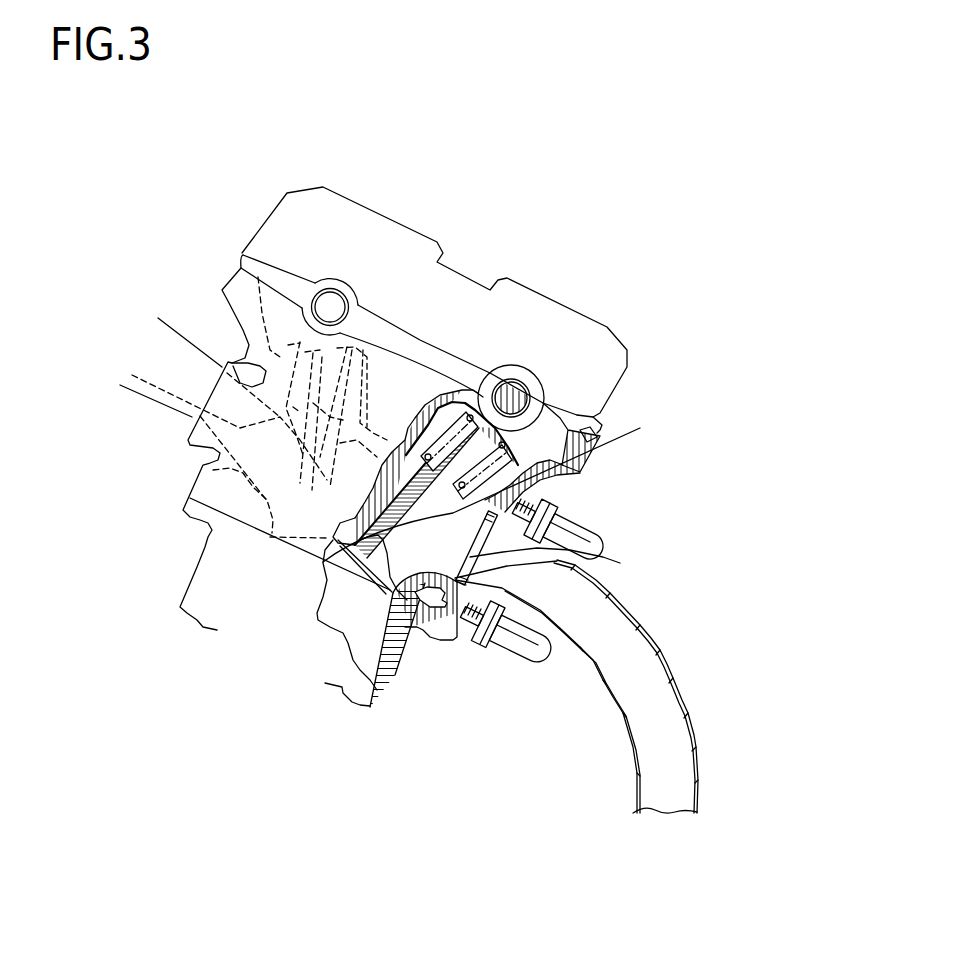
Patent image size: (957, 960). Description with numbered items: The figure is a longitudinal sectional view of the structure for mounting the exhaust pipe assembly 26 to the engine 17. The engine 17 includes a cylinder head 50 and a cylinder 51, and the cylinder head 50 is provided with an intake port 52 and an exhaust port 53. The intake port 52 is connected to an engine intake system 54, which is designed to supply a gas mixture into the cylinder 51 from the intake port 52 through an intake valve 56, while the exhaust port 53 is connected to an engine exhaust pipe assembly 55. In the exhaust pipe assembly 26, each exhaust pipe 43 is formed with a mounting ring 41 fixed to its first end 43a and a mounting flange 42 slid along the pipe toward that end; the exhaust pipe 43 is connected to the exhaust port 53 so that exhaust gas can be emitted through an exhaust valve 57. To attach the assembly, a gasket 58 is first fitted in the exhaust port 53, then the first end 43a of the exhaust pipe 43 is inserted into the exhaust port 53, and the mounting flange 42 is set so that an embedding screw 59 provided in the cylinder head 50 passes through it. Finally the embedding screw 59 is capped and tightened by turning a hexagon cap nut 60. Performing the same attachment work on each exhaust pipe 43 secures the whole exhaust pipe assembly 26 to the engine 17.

The engine 17 is at (646, 255).
The exhaust pipe assembly 26 is at (660, 631).
The mounting ring 41 is at (527, 643).
The mounting flange 42 is at (483, 632).
The exhaust pipe 43 is at (685, 692).
The first end of the exhaust pipe 43a is at (323, 562).
The cylinder head 50 is at (245, 297).
The cylinder 51 is at (397, 679).
The intake port 52 is at (132, 375).
The exhaust port 53 is at (603, 440).
The engine intake system 54 is at (187, 340).
The engine exhaust pipe assembly 55 is at (625, 581).
The intake valve 56 is at (270, 508).
The exhaust valve 57 is at (393, 593).
The gasket 58 is at (457, 570).
The embedding screw 59 is at (560, 495).
The hexagon cap nut 60 is at (585, 527).